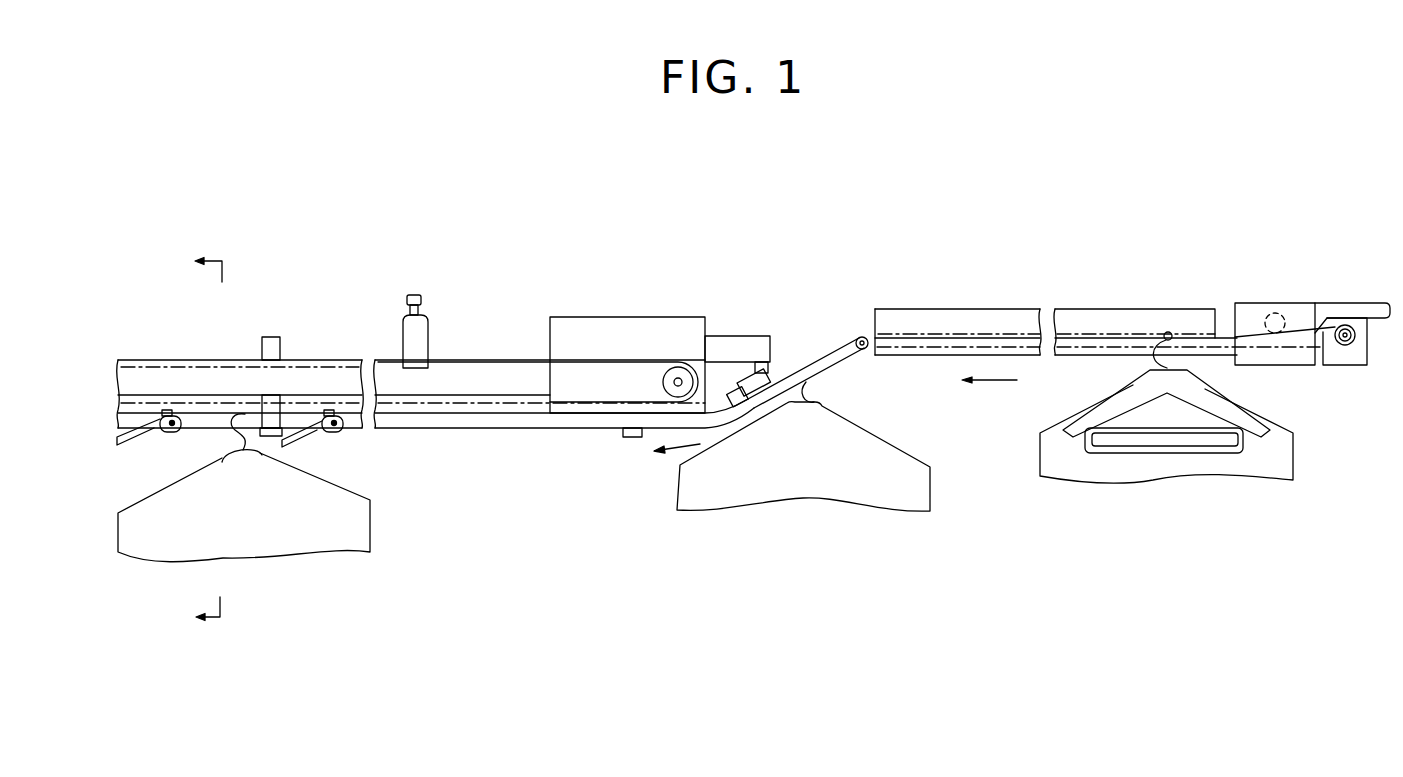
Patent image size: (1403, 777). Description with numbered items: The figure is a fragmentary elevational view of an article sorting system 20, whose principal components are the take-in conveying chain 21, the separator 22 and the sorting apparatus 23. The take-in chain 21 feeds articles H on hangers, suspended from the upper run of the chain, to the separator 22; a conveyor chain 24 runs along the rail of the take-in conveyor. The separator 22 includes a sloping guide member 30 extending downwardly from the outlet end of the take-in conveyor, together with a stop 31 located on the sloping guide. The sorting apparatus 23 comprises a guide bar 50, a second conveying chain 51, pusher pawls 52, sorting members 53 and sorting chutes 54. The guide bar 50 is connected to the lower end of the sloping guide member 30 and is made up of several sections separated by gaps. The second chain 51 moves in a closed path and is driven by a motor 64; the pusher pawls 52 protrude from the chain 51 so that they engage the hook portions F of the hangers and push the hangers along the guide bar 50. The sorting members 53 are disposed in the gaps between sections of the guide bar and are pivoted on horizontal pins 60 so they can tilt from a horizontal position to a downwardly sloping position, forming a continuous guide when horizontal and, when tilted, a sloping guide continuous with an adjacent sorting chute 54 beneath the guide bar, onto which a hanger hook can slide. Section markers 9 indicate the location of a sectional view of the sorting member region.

The section line for FIG. 9 is at (194, 442).
The article sorting system 20 is at (1129, 302).
The take-in conveying chain 21 is at (1226, 325).
The separator 22 is at (781, 364).
The sorting apparatus 23 is at (354, 441).
The conveyor chain 24 is at (1080, 337).
The sloping guide member 30 is at (839, 344).
The stop 31 is at (742, 408).
The guide bar 50 is at (498, 431).
The second conveying chain 51 is at (609, 410).
The pusher pawl 52 is at (270, 337).
The sorting member 53 is at (160, 434).
The sorting chute 54 is at (126, 442).
The horizontal pin 60 is at (180, 413).
The motor 64 is at (692, 365).
The hook portion F is at (815, 387).
The article H is at (273, 552).